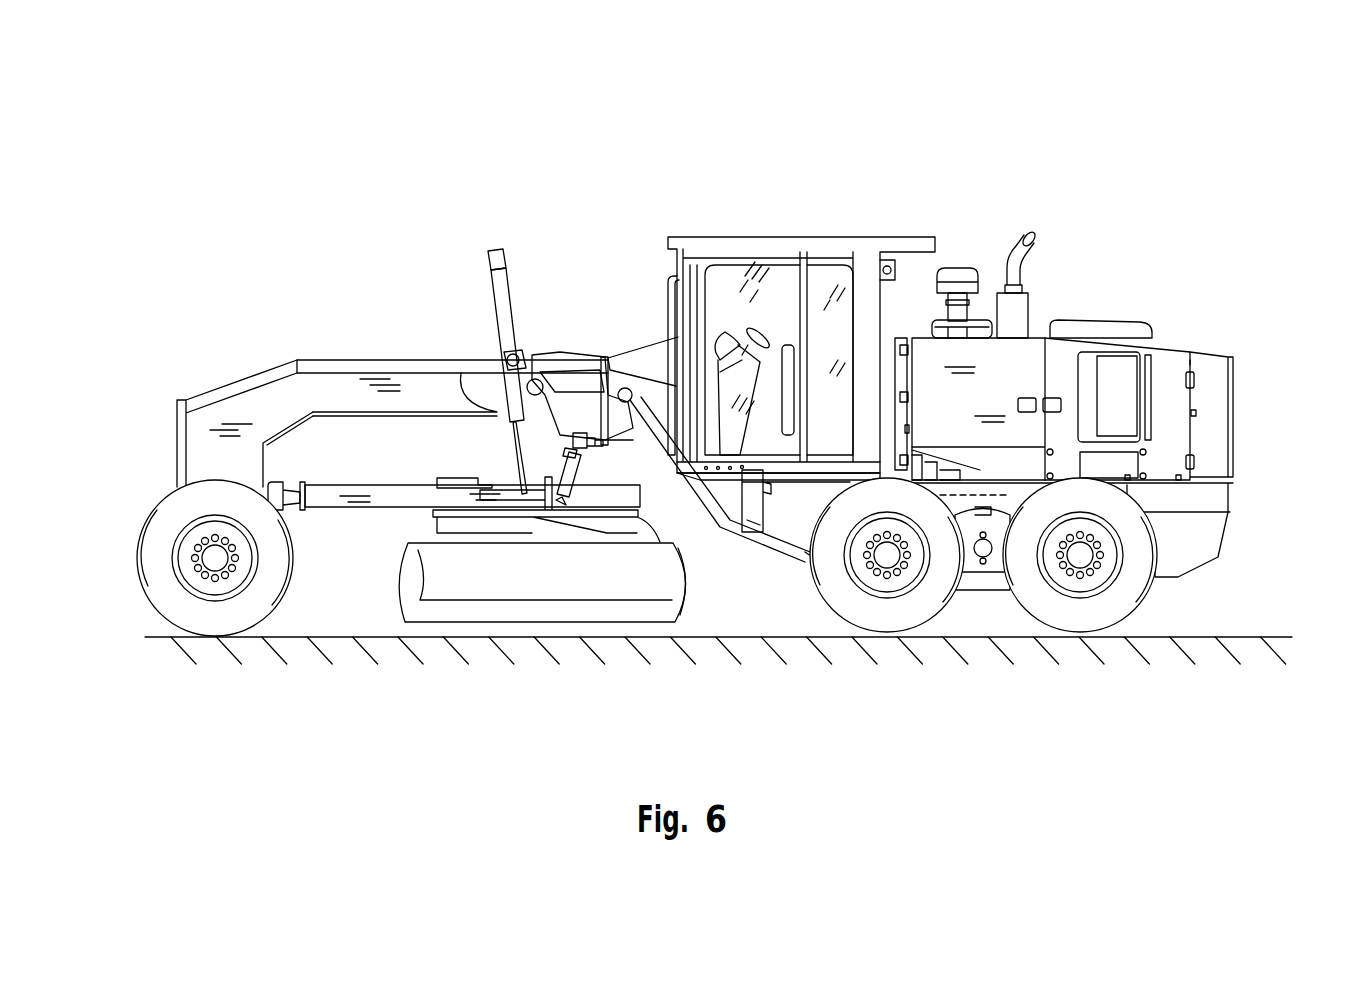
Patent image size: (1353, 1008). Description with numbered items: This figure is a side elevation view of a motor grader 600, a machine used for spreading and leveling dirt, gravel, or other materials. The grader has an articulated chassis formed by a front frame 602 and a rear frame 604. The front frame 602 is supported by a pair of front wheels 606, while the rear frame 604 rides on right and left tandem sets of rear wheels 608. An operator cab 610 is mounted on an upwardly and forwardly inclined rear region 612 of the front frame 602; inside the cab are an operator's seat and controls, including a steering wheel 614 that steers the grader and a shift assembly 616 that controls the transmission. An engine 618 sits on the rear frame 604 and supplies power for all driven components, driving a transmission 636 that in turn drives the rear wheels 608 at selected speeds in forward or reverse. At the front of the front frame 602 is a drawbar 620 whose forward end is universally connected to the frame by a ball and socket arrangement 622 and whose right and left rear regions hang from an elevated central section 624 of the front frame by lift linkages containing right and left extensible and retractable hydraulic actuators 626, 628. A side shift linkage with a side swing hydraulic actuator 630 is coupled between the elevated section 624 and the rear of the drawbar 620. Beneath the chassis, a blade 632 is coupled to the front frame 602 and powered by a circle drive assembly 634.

The motor grader 600 is at (1076, 142).
The front frame 602 is at (257, 354).
The rear frame 604 is at (1203, 580).
The front wheels 606 is at (203, 625).
The rear wheels 608 is at (877, 622).
The operator cab 610 is at (845, 228).
The rear region of the front frame 612 is at (686, 475).
The steering wheel 614 is at (746, 345).
The shift assembly 616 is at (700, 333).
The engine 618 is at (1056, 366).
The drawbar 620 is at (388, 490).
The ball and socket arrangement 622 is at (292, 512).
The elevated central section 624 is at (348, 360).
The right hydraulic actuator 626 is at (492, 322).
The left hydraulic actuator 628 is at (488, 270).
The side swing hydraulic actuator 630 is at (580, 468).
The blade 632 is at (420, 600).
The circle drive assembly 634 is at (462, 478).
The transmission 636 is at (983, 562).